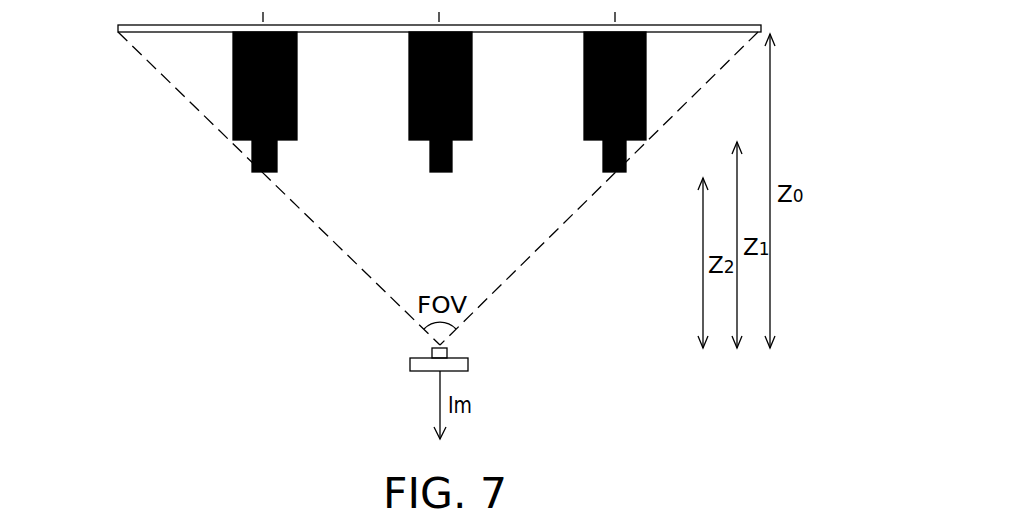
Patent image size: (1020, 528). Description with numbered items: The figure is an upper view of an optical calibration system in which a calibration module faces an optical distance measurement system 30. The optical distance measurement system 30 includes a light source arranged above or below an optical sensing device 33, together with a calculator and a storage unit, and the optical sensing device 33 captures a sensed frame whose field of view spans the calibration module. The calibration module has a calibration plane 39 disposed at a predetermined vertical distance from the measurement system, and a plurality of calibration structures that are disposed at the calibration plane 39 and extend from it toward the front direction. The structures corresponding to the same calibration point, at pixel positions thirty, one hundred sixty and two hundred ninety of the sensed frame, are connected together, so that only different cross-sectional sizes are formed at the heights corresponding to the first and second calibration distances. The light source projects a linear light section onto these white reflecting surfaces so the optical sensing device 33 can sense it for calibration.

The calibration plane 39 is at (761, 28).
The optical sensing device 33 is at (450, 347).
The optical distance measurement system 30 is at (393, 379).